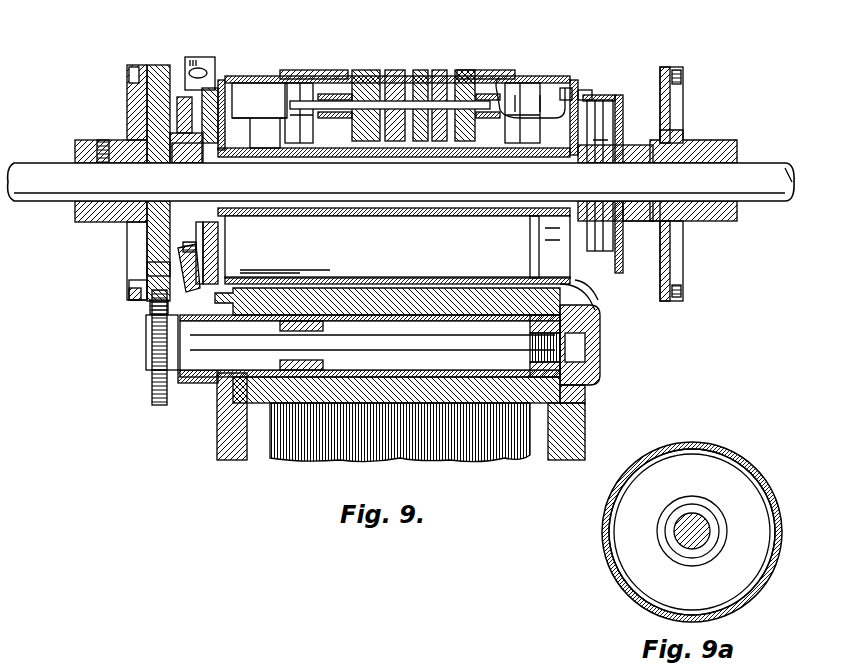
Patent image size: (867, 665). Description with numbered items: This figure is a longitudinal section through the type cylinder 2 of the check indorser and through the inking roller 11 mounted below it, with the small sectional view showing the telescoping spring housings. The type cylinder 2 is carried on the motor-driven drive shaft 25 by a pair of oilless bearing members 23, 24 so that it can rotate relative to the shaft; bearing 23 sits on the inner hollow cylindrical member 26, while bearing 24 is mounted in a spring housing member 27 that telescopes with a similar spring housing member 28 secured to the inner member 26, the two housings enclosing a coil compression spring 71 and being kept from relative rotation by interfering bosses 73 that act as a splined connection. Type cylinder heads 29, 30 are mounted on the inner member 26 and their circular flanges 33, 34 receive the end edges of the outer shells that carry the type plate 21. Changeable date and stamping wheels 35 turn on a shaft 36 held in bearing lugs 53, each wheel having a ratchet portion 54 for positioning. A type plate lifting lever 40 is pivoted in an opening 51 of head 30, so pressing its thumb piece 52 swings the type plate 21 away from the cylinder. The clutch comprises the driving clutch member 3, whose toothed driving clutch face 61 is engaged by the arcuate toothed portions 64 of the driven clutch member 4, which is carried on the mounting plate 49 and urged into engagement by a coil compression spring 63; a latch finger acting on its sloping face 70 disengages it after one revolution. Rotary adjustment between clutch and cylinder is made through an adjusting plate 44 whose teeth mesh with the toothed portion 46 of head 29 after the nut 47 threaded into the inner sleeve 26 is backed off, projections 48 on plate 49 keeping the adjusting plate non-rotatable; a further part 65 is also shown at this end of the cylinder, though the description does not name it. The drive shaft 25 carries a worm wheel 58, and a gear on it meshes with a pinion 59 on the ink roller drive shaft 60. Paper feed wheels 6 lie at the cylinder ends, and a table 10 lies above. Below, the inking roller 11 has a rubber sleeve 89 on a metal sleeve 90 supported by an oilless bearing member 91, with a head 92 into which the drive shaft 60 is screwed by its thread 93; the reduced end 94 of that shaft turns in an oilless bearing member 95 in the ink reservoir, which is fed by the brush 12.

In FIG. 9, the type cylinder 2 is at (455, 237).
In FIG. 9, the driving clutch member 3 is at (140, 285).
In FIG. 9, the driven clutch member 4 is at (190, 288).
In FIG. 9, the paper feed wheels 6 is at (131, 66).
In FIG. 9, the horizontal table 10 is at (171, 13).
In FIG. 9, the inking roller 11 is at (171, 80).
In FIG. 9, the brush 12 is at (300, 443).
In FIG. 9, the type plate 21 is at (300, 71).
In FIG. 9, the oilless bearing member 23 is at (147, 230).
In FIG. 9, the oilless bearing member 24 is at (641, 226).
In FIG. 9, the drive shaft 25 is at (55, 197).
In FIG. 9A, the drive shaft 25 is at (708, 535).
In FIG. 9, the inner cylindrical member 26 is at (410, 218).
In FIG. 9, the spring housing member 27 is at (623, 116).
In FIG. 9A, the spring housing member 27 is at (768, 503).
In FIG. 9, the spring housing member 28 is at (592, 282).
In FIG. 9A, the spring housing member 28 is at (712, 444).
In FIG. 9, the type cylinder head 29 is at (233, 78).
In FIG. 9, the type cylinder head 30 is at (548, 240).
In FIG. 9, the circular flange 33 is at (598, 320).
In FIG. 9, the circular flange 34 is at (224, 84).
In FIG. 9, the date and stamping wheels 35 is at (366, 70).
In FIG. 9, the shaft 36 is at (440, 70).
In FIG. 9, the type plate lifting lever 40 is at (560, 86).
In FIG. 9, the adjusting plate 44 is at (217, 86).
In FIG. 9, the toothed portion 46 is at (230, 252).
In FIG. 9, the nut 47 is at (218, 163).
In FIG. 9, the projections 48 is at (230, 108).
In FIG. 9, the mounting plate 49 is at (185, 96).
In FIG. 9, the opening 51 is at (578, 80).
In FIG. 9, the thumb piece 52 is at (592, 93).
In FIG. 9, the bearing lugs 53 is at (328, 94).
In FIG. 9, the ratchet portion 54 is at (420, 70).
In FIG. 9, the worm wheel 58 is at (152, 306).
In FIG. 9, the pinion 59 is at (152, 388).
In FIG. 9, the ink roller drive shaft 60 is at (146, 370).
In FIG. 9, the driving clutch face 61 is at (150, 273).
In FIG. 9, the coil compression spring 63 is at (218, 250).
In FIG. 9, the arcuate toothed portions 64 is at (178, 258).
In FIG. 9, the cap 65 is at (187, 60).
In FIG. 9, the sloping face 70 is at (130, 88).
In FIG. 9, the coil compression spring 71 is at (613, 136).
In FIG. 9, the interfering bosses 73 is at (620, 100).
In FIG. 9A, the interfering bosses 73 is at (748, 468).
In FIG. 9, the rubber sleeve 89 is at (508, 405).
In FIG. 9, the metal sleeve 90 is at (378, 405).
In FIG. 9, the oilless bearing member 91 is at (200, 383).
In FIG. 9, the head 92 is at (585, 400).
In FIG. 9, the thread 93 is at (590, 384).
In FIG. 9, the reduced end 94 is at (600, 355).
In FIG. 9, the oilless bearing member 95 is at (598, 372).